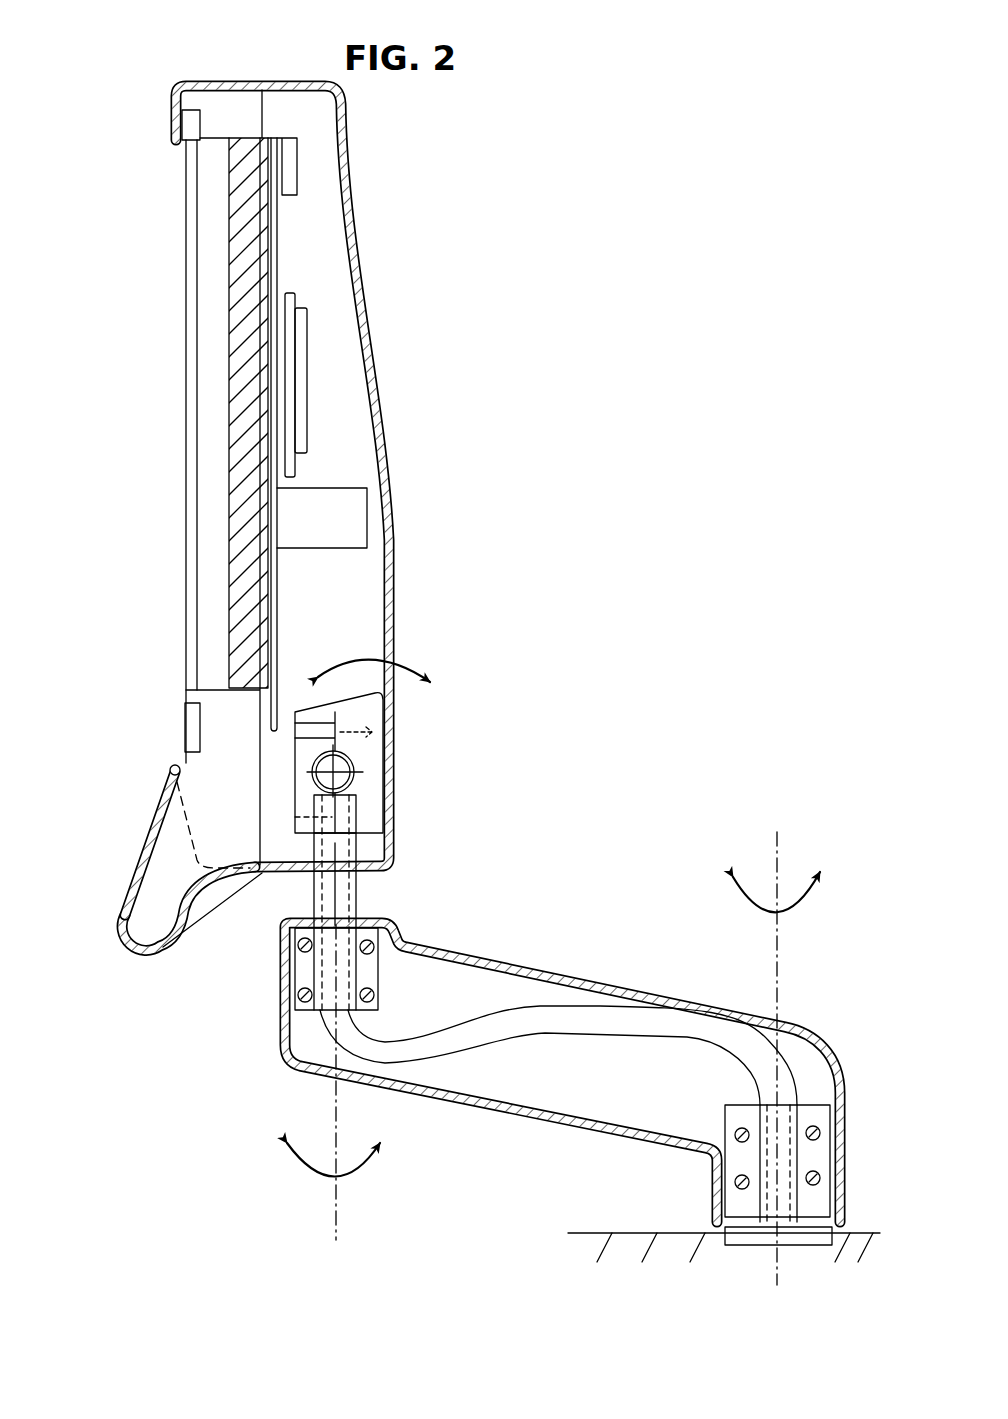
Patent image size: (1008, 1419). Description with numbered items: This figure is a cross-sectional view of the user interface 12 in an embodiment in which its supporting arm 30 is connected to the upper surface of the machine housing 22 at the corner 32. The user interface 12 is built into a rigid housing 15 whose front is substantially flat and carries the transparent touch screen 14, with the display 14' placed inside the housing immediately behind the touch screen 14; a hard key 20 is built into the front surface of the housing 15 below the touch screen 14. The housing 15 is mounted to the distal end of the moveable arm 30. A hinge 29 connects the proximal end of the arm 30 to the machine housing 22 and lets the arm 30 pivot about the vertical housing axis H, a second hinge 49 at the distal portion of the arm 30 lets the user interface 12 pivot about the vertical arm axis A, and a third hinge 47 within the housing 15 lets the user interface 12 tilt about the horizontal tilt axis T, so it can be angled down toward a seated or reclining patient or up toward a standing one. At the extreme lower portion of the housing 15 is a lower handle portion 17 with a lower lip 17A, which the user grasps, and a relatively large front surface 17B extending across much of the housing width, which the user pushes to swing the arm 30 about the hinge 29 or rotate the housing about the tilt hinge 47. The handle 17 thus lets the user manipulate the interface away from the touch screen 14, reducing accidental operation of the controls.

The user interface 12 is at (392, 192).
The touch screen 14 is at (147, 451).
The display 14' is at (185, 421).
The housing 15 is at (393, 557).
The lower handle portion 17 is at (128, 878).
The lower lip 17A is at (153, 943).
The front surface 17B is at (155, 817).
The hard key 20 is at (188, 730).
The third hinge 47 is at (380, 790).
The tilt axis T is at (352, 760).
The second hinge 49 is at (278, 987).
The arm 30 is at (503, 1107).
The hinge 29 is at (777, 1160).
The corner 32 is at (687, 1230).
The machine housing 22 is at (590, 1243).
The arm axis A is at (333, 1222).
The housing axis H is at (777, 845).